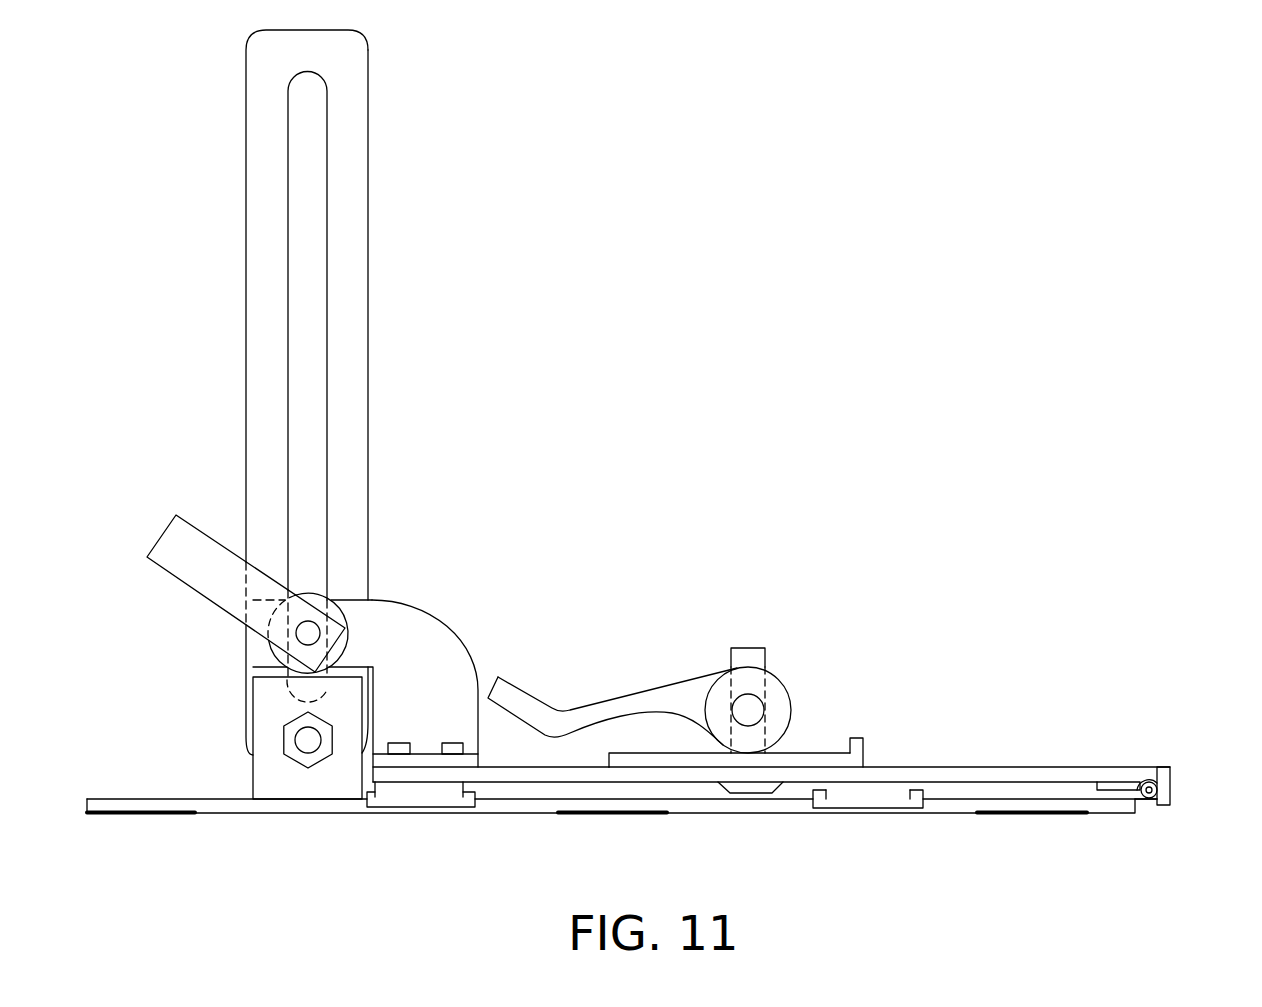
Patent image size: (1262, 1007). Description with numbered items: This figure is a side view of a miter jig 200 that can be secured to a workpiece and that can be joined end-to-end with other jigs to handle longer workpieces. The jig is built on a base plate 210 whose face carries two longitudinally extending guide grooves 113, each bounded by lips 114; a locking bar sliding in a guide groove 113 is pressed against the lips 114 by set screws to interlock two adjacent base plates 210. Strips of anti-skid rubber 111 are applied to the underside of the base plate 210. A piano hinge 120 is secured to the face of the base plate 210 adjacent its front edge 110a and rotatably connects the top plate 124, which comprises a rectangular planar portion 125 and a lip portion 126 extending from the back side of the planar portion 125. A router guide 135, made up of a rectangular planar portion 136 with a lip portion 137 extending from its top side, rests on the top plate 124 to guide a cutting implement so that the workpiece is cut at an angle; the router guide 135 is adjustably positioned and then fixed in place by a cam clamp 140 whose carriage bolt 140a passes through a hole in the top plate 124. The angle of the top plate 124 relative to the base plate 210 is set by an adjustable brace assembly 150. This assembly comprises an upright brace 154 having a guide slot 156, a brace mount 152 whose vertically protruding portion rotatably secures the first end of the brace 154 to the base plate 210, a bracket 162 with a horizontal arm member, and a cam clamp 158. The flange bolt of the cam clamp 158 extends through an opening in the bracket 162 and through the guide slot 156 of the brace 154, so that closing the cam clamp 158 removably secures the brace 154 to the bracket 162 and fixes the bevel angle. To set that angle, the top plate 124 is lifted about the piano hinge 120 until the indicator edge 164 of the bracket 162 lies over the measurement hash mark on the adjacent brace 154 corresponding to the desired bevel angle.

The adjustable brace assembly 150 is at (258, 302).
The brace 154 is at (355, 258).
The guide slot 156 is at (328, 168).
The brace mount 152 is at (266, 778).
The cam clamp 158 is at (185, 582).
The indicator edge 164 is at (335, 593).
The bracket 162 is at (425, 638).
The cam clamp 140 is at (640, 702).
The carriage bolt 140a is at (748, 650).
The router guide 135 is at (793, 757).
The lip portion 137 is at (858, 737).
The planar portion 136 is at (640, 767).
The planar portion 125 is at (1058, 767).
The top plate 124 is at (938, 776).
The piano hinge 120 is at (1160, 768).
The lip portion 126 is at (1180, 800).
The base plate 210 is at (288, 806).
The anti-skid rubber 111 is at (105, 815).
The guide groove 113 is at (420, 814).
The lips 114 is at (825, 808).
The front edge 110a is at (1150, 807).
The miter jig 200 is at (838, 300).